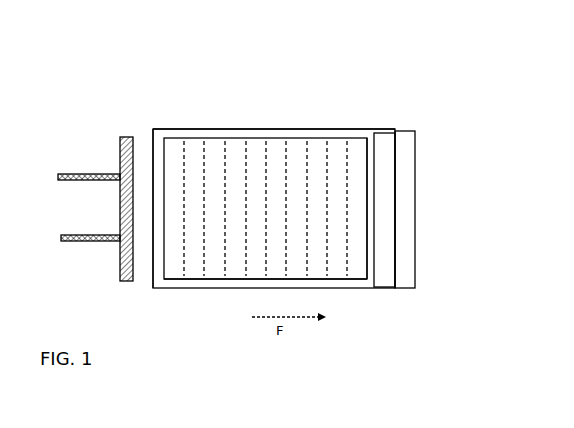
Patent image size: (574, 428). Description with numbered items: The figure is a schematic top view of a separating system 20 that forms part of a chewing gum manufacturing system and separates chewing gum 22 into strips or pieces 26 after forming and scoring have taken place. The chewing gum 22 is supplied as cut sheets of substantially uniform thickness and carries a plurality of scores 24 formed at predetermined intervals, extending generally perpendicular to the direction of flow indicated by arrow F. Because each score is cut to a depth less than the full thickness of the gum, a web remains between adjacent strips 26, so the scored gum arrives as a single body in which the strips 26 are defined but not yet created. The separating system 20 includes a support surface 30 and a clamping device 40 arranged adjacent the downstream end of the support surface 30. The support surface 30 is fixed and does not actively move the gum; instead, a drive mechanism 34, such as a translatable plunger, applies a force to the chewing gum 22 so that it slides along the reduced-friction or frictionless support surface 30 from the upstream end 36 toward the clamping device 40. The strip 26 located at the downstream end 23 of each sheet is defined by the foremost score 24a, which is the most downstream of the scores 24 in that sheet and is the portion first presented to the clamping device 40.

The separating system 20 is at (431, 96).
The chewing gum 22 is at (233, 288).
The downstream end 23 is at (368, 261).
The scores 24 is at (221, 166).
The foremost score 24a is at (346, 261).
The strips 26 is at (257, 150).
The support surface 30 is at (328, 128).
The drive mechanism 34 is at (120, 153).
The upstream end 36 is at (153, 142).
The clamping device 40 is at (411, 288).